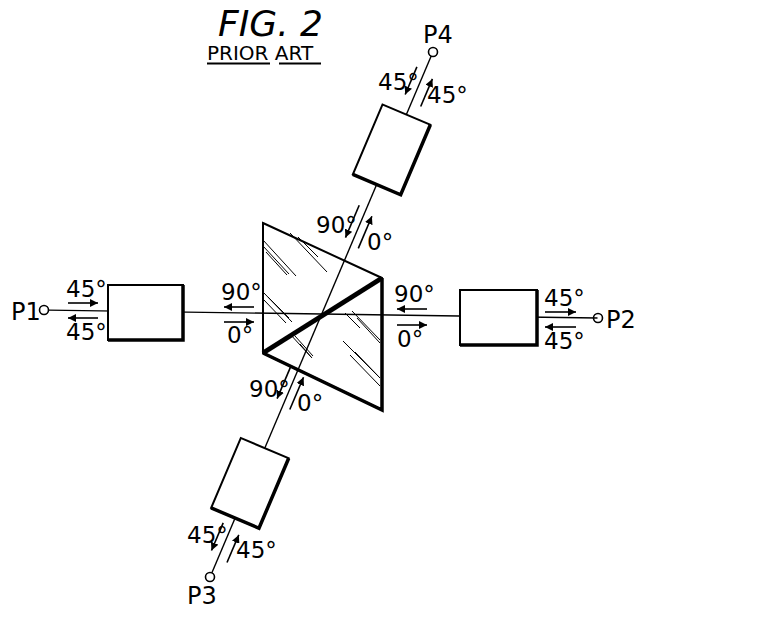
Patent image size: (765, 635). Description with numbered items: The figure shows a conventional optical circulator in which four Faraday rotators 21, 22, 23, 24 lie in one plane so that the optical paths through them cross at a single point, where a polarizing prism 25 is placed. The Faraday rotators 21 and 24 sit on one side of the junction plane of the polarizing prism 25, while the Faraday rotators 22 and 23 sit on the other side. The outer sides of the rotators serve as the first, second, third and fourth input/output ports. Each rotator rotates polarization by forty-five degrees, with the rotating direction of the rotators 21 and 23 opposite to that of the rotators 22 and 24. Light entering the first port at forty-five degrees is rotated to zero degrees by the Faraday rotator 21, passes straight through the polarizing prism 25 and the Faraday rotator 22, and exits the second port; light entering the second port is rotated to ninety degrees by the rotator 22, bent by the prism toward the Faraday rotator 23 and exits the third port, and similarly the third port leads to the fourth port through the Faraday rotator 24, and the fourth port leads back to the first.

The Faraday rotator 21 is at (147, 285).
The Faraday rotator 22 is at (495, 290).
The Faraday rotator 23 is at (282, 489).
The Faraday rotator 24 is at (421, 157).
The polarizing prism 25 is at (382, 394).